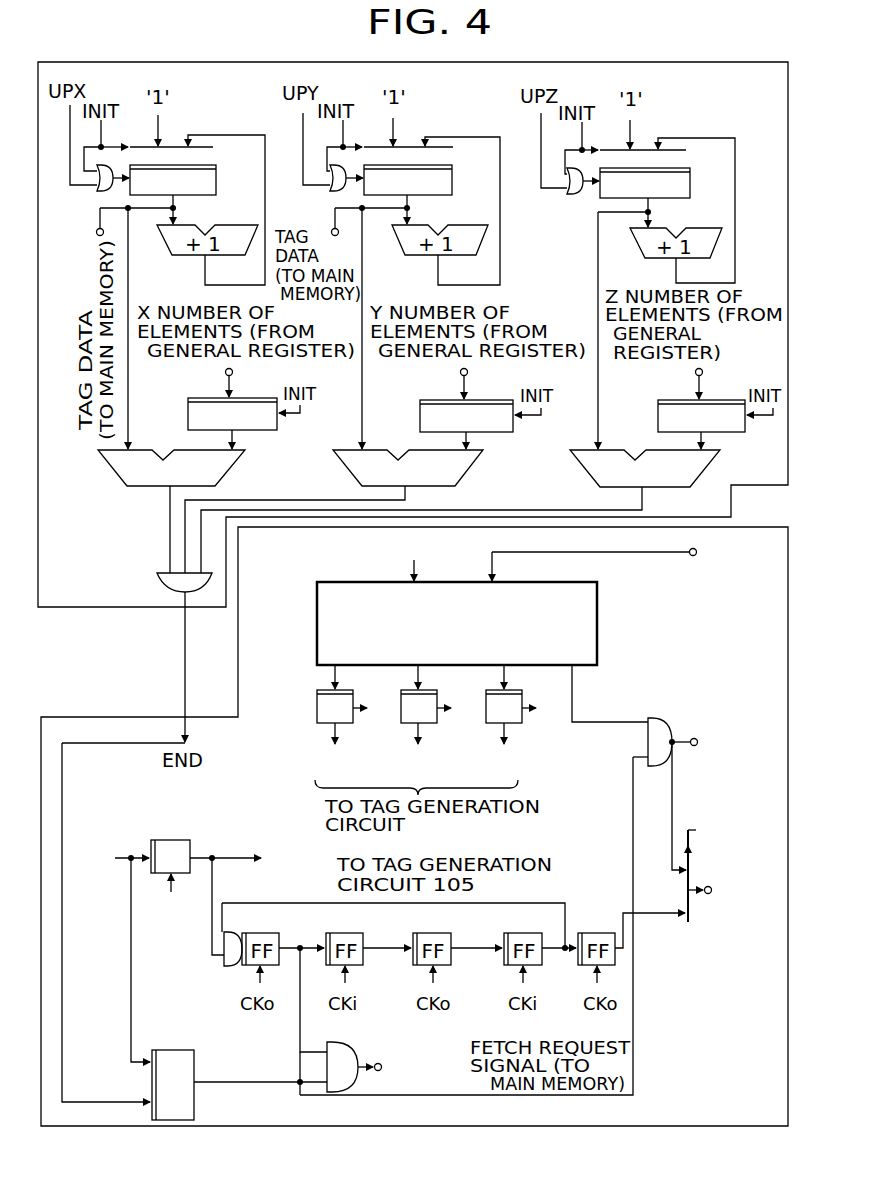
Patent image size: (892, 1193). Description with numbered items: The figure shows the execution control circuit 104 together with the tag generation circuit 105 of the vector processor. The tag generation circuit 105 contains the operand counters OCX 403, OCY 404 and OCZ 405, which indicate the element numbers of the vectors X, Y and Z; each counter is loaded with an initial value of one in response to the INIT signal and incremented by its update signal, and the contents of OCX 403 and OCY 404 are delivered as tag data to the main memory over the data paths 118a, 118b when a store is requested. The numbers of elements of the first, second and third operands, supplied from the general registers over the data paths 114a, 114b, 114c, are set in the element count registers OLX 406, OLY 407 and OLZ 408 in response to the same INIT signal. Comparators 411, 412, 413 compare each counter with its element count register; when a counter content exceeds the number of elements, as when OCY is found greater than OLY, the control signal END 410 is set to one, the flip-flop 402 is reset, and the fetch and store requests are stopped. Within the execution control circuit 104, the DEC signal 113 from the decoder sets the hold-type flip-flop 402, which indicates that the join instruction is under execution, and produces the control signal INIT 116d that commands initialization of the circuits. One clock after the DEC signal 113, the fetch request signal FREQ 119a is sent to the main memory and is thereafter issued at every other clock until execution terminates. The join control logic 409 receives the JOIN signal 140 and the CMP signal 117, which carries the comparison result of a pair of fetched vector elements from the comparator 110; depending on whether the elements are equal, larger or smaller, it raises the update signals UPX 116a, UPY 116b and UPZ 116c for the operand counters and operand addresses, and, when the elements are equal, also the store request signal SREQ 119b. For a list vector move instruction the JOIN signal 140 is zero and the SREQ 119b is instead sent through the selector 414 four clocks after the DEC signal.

The tag generation circuit 105 is at (700, 62).
The operand counter OCX 403 is at (214, 178).
The operand counter OCY 404 is at (450, 178).
The operand counter OCZ 405 is at (688, 181).
The data path 118a is at (100, 209).
The data path 118b is at (335, 209).
The data path 114a is at (225, 374).
The data path 114b is at (460, 374).
The data path 114c is at (695, 374).
The element count register OLX 406 is at (188, 406).
The element count register OLY 407 is at (420, 416).
The element count register OLZ 408 is at (658, 416).
The comparator 411 is at (235, 462).
The comparator 412 is at (472, 464).
The comparator 413 is at (706, 466).
The execution control circuit 104 is at (735, 525).
The control signal END 410 is at (184, 666).
The join control logic 409 is at (599, 626).
The JOIN signal 140 is at (414, 568).
The comparison result signal CMP 117 is at (577, 552).
The comparator 110 is at (705, 580).
The update signal UPX 116a is at (333, 738).
The update signal UPY 116b is at (416, 739).
The update signal UPZ 116c is at (502, 739).
The control signal INIT 116d is at (238, 857).
The control signal DEC 113 is at (118, 857).
The selector 414 is at (688, 921).
The store request signal SREQ 119b is at (699, 886).
The hold-type flip-flop 402 is at (175, 1049).
The fetch request signal FREQ 119a is at (354, 1062).